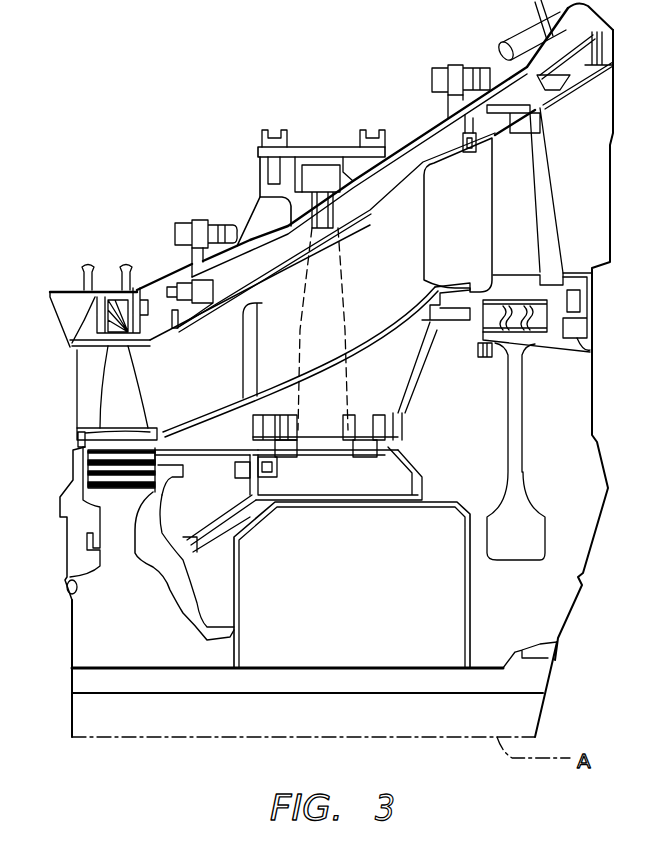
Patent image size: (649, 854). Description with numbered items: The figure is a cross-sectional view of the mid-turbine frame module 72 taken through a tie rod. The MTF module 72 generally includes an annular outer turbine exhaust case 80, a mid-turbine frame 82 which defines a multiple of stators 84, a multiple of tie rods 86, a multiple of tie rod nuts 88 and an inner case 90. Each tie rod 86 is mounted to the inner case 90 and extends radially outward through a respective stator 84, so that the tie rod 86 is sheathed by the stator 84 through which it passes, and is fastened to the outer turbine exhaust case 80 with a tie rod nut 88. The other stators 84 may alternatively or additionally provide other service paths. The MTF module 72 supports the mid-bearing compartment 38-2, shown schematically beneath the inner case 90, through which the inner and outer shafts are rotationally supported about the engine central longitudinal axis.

The MTF module 72 is at (212, 112).
The outer turbine exhaust case 80 is at (407, 145).
The mid-turbine frame 82 is at (437, 278).
The stator 84 is at (407, 227).
The tie rod 86 is at (347, 300).
The tie rod nut 88 is at (293, 147).
The inner case 90 is at (387, 443).
The mid-bearing compartment 38-2 is at (382, 592).